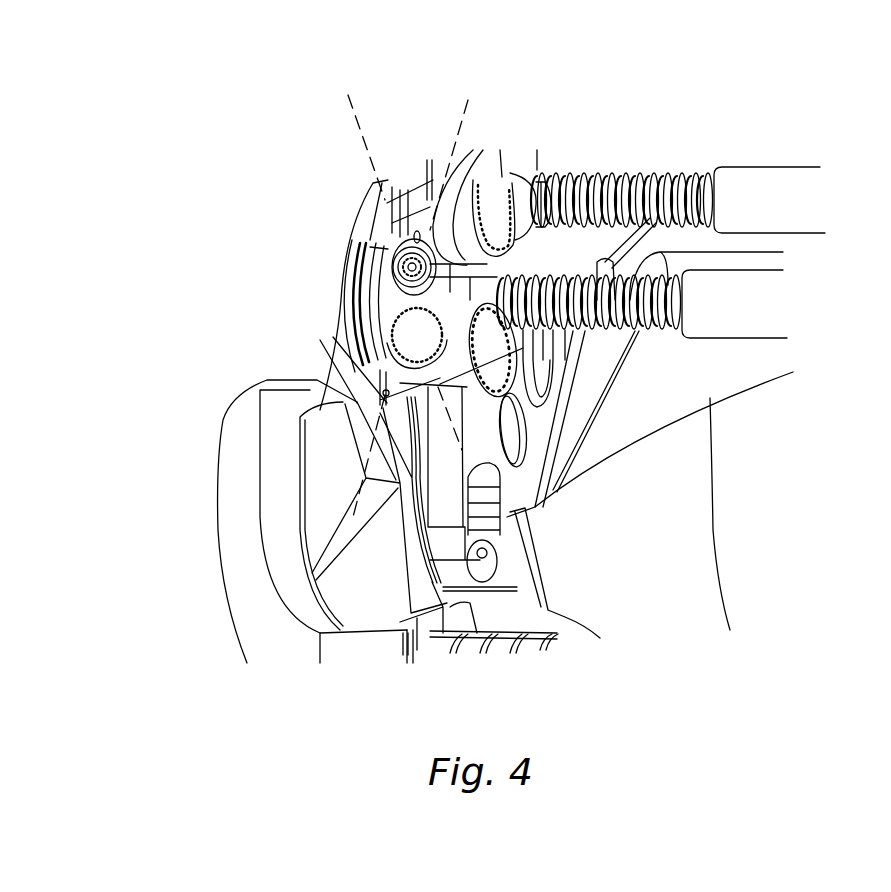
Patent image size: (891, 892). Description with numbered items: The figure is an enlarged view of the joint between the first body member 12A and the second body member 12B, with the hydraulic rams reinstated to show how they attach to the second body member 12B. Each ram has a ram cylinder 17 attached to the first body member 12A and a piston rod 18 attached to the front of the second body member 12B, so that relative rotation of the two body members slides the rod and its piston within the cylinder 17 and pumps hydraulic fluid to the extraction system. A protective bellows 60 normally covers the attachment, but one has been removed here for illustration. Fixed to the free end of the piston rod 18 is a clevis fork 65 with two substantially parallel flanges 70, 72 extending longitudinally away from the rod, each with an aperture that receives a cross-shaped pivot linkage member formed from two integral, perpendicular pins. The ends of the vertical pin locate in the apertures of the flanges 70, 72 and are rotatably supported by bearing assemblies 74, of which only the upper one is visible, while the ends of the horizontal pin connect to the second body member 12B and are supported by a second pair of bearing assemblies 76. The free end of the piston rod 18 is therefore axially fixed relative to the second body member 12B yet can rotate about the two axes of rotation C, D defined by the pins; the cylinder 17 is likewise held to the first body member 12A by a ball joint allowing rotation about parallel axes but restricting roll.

The first body member 12A is at (650, 590).
The second body member 12B is at (250, 567).
The ram cylinder 17 is at (752, 192).
The piston rod 18 is at (532, 184).
The protective bellows 60 is at (452, 170).
The clevis fork 65 is at (473, 348).
The flange 70 is at (438, 232).
The flange 72 is at (440, 384).
The bearing assemblies 74 is at (392, 262).
The second pair of bearing assemblies 76 is at (400, 334).
The axis of rotation C is at (357, 128).
The axis of rotation D is at (463, 132).